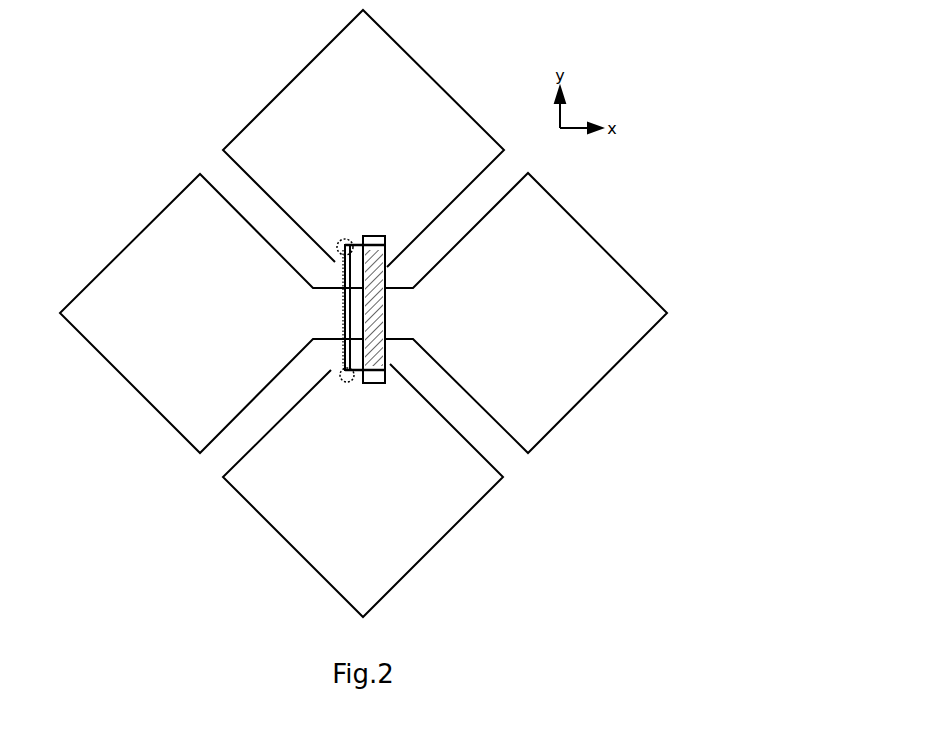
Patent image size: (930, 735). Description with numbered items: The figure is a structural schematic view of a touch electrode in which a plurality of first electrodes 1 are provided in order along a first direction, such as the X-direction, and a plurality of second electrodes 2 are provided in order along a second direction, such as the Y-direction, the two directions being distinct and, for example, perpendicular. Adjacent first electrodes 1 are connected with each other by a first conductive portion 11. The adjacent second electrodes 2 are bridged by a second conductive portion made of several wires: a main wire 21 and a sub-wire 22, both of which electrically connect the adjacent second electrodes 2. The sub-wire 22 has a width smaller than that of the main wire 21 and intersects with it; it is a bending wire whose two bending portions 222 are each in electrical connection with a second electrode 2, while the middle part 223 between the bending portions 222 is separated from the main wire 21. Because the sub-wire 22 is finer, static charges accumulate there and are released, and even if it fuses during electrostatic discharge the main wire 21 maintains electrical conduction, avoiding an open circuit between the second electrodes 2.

The first electrode 1 is at (363, 313).
The second electrode 2 is at (363, 313).
The first conductive portion 11 is at (388, 287).
The main wire 21 is at (386, 313).
The sub-wire 22 is at (262, 278).
The bending portion 222 is at (338, 254).
The middle part 223 is at (343, 319).